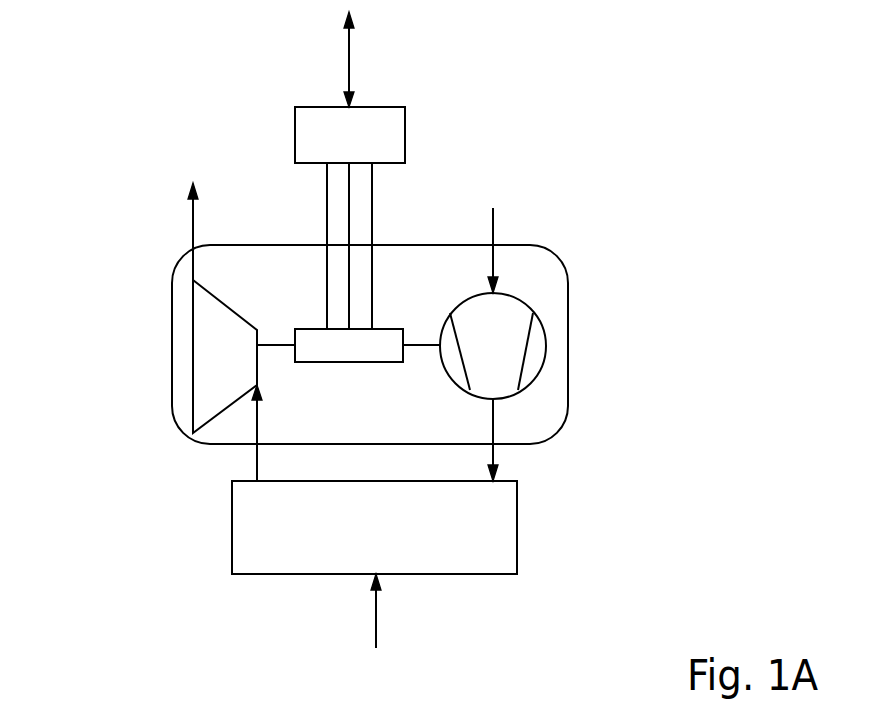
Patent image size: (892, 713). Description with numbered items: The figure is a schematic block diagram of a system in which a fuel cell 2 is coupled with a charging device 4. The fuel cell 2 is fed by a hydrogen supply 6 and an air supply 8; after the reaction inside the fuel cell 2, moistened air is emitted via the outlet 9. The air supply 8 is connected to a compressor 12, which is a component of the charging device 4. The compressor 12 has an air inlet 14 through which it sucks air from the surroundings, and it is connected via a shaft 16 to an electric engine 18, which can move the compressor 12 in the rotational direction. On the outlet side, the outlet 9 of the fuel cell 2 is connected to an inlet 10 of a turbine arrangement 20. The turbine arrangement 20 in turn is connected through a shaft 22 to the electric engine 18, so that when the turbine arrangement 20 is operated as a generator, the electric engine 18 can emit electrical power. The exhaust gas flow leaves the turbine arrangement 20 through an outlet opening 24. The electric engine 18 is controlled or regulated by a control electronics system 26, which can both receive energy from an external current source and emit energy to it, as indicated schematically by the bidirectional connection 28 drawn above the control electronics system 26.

The fuel cell 2 is at (492, 523).
The charging device 4 is at (540, 282).
The hydrogen supply 6 is at (376, 610).
The air supply 8 is at (495, 453).
The outlet 9 is at (257, 458).
The inlet 10 is at (257, 422).
The compressor 12 is at (493, 347).
The air inlet 14 is at (493, 220).
The shaft 16 is at (422, 343).
The electric engine 18 is at (310, 347).
The turbine arrangement 20 is at (180, 367).
The shaft 22 is at (275, 345).
The outlet opening 24 is at (193, 223).
The control electronics system 26 is at (383, 137).
The bidirectional connection 28 is at (347, 53).